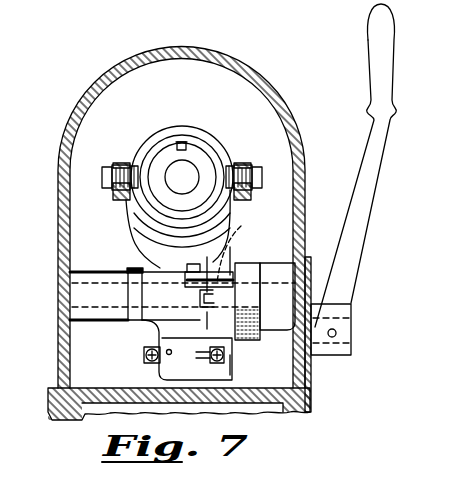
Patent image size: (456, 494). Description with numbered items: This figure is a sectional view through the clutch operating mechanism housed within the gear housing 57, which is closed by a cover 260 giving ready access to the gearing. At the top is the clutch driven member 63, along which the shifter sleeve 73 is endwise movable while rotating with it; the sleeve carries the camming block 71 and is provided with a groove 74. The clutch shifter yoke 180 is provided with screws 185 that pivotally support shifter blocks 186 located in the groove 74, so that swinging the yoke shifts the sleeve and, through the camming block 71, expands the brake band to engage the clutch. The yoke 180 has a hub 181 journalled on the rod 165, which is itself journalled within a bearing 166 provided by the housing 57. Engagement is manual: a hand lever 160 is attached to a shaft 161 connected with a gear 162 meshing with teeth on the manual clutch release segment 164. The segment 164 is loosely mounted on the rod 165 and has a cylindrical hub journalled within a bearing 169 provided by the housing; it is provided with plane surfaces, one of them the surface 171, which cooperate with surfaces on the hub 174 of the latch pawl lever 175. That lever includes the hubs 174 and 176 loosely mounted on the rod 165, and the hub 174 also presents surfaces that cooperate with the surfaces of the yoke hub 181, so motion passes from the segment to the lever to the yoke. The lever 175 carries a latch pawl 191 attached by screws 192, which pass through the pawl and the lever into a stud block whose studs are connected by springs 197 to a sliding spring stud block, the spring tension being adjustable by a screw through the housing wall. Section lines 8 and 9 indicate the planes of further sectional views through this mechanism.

The gear housing 57 is at (57, 262).
The shifter sleeve 73 is at (163, 76).
The cover 260 is at (240, 60).
The hand lever 160 is at (378, 59).
The shaft 161 is at (309, 372).
The gear 162 is at (250, 352).
The manual clutch release segment 164 is at (290, 261).
The rod 165 is at (68, 298).
The bearing 166 is at (93, 268).
The bearing 169 is at (283, 268).
The plane surface 171 is at (209, 296).
The hub 174 is at (243, 224).
The latch pawl lever 175 is at (146, 353).
The hub 176 is at (144, 269).
The clutch shifter yoke 180 is at (127, 212).
The hub 181 is at (150, 316).
The screws 185 is at (107, 166).
The shifter blocks 186 is at (136, 163).
The latch pawl 191 is at (170, 379).
The screws 192 is at (181, 354).
The springs 197 is at (143, 362).
The driven member 63 is at (157, 162).
The camming block 71 is at (185, 141).
The groove 74 is at (180, 141).
The section line 8- 8 is at (233, 247).
The section line 9- 9 is at (207, 257).